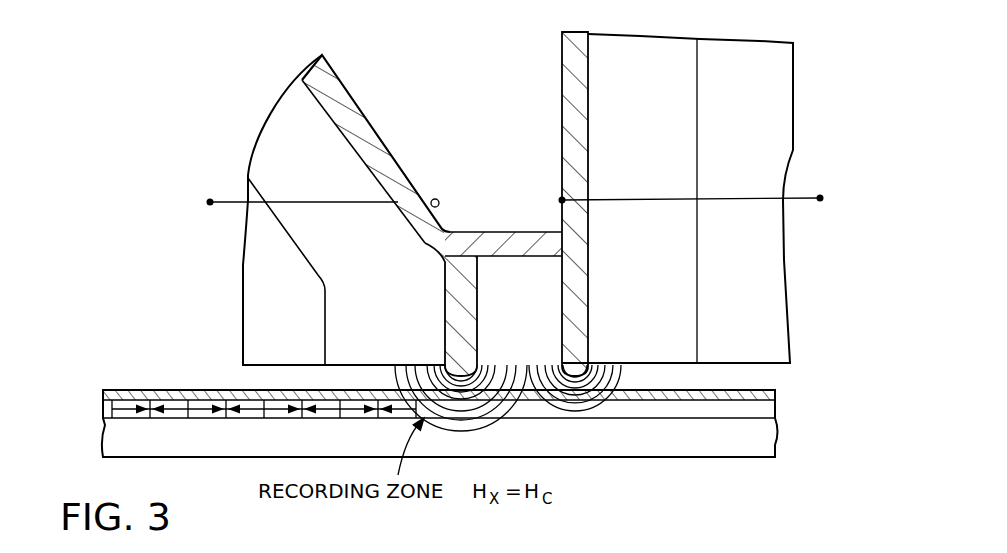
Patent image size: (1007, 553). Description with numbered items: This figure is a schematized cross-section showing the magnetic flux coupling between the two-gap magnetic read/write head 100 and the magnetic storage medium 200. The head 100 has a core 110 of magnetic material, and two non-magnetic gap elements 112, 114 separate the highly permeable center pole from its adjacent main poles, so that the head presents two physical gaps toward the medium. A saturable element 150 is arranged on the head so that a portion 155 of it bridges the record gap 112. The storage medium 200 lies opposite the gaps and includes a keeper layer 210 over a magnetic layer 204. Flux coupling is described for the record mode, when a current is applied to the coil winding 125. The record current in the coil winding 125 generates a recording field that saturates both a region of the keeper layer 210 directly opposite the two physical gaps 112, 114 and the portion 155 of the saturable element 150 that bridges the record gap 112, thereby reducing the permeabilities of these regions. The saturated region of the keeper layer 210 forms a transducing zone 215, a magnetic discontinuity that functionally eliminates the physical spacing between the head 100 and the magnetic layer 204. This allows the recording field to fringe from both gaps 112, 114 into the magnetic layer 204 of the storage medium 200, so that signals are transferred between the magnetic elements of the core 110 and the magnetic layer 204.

The two-gap magnetic read/write head 100 is at (255, 93).
The core 110 is at (762, 80).
The non-magnetic gap element 112 is at (460, 293).
The non-magnetic gap element 114 is at (590, 291).
The coil winding 125 is at (232, 200).
The saturable element 150 is at (345, 100).
The portion of the saturable element 155 is at (468, 240).
The magnetic storage medium 200 is at (97, 430).
The magnetic layer 204 is at (777, 402).
The keeper layer 210 is at (705, 386).
The transducing zone 215 is at (577, 412).